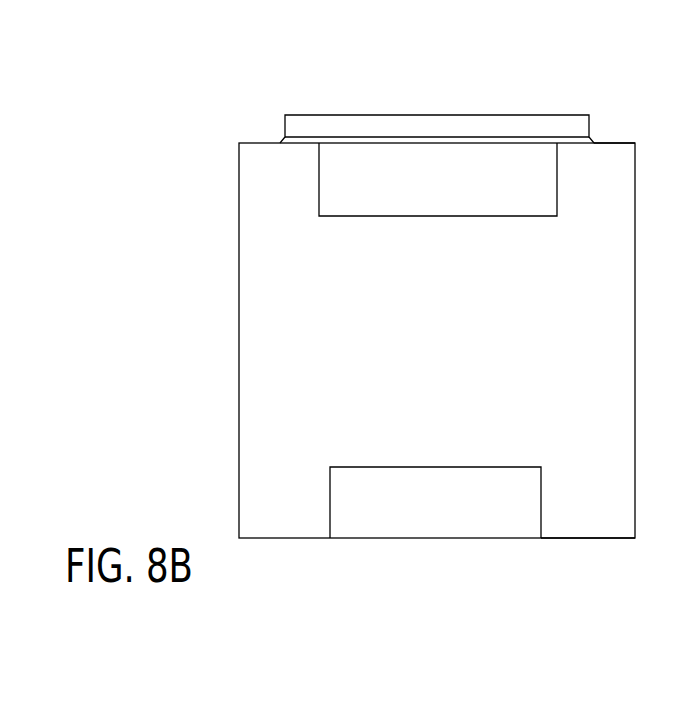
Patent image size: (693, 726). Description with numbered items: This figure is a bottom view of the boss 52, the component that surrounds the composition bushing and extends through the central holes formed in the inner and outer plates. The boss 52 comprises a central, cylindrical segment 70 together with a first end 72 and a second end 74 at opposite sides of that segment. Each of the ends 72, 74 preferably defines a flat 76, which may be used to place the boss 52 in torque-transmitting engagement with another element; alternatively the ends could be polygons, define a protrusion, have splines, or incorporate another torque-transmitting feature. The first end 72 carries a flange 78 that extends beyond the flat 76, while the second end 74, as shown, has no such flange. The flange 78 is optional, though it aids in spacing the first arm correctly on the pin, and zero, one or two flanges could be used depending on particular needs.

The boss 52 is at (411, 335).
The central, cylindrical segment 70 is at (393, 340).
The first end 72 is at (642, 113).
The second end 74 is at (603, 580).
The flats 76 is at (418, 337).
The flange 78 is at (437, 95).